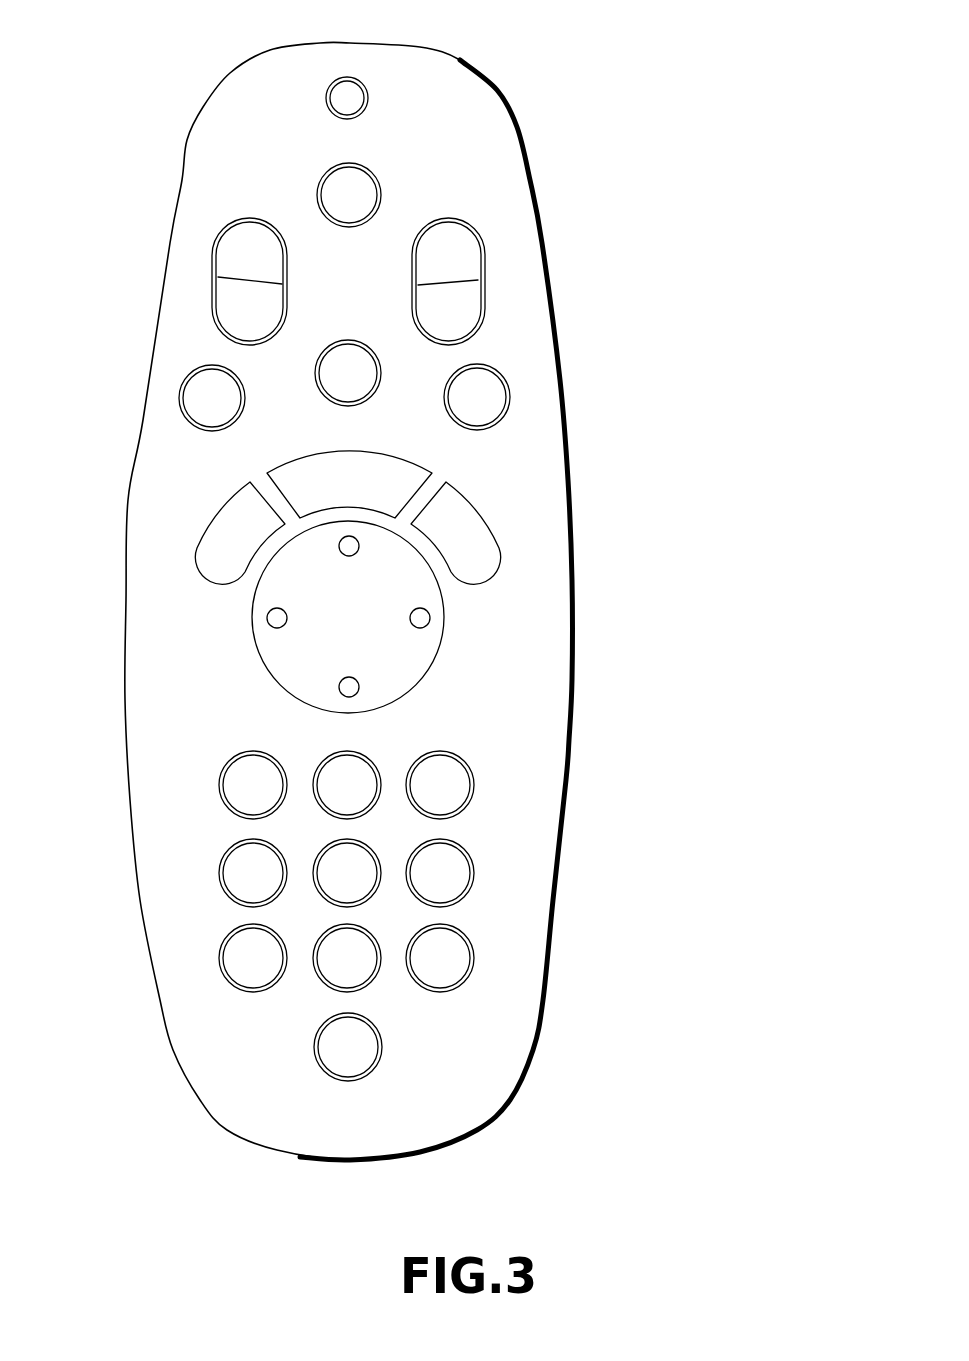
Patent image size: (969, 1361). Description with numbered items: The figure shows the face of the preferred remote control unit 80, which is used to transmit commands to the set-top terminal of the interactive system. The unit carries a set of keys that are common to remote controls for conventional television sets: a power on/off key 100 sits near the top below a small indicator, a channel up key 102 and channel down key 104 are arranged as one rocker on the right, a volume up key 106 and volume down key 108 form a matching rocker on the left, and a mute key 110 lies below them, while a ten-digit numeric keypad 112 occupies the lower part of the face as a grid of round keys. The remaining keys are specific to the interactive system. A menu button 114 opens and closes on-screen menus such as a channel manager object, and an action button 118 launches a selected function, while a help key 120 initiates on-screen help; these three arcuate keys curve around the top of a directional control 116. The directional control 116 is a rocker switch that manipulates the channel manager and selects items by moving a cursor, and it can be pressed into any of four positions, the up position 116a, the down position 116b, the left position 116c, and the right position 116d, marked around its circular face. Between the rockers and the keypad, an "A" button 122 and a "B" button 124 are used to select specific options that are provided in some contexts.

The remote control unit 80 is at (623, 62).
The power on/off key 100 is at (355, 192).
The channel up key 102 is at (453, 252).
The channel down key 104 is at (453, 322).
The volume up key 106 is at (227, 252).
The volume down key 108 is at (228, 315).
The mute key 110 is at (200, 397).
The numeric keypad 112 is at (480, 829).
The menu button 114 is at (248, 545).
The directional control 116 is at (360, 634).
The up position 116a is at (352, 548).
The down position 116b is at (347, 688).
The left position 116c is at (275, 623).
The right position 116d is at (422, 622).
The action button 118 is at (365, 495).
The help key 120 is at (482, 545).
The "A" button 122 is at (350, 352).
The "B" button 124 is at (475, 398).